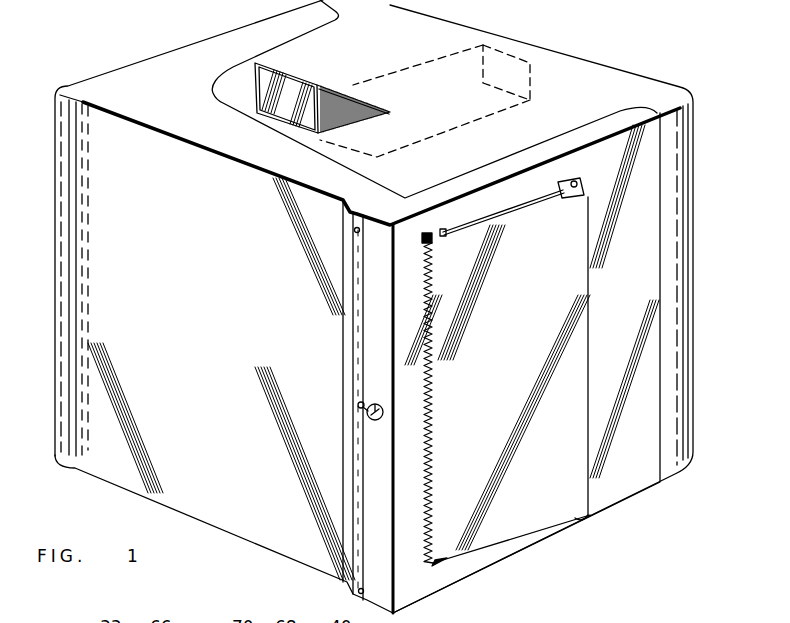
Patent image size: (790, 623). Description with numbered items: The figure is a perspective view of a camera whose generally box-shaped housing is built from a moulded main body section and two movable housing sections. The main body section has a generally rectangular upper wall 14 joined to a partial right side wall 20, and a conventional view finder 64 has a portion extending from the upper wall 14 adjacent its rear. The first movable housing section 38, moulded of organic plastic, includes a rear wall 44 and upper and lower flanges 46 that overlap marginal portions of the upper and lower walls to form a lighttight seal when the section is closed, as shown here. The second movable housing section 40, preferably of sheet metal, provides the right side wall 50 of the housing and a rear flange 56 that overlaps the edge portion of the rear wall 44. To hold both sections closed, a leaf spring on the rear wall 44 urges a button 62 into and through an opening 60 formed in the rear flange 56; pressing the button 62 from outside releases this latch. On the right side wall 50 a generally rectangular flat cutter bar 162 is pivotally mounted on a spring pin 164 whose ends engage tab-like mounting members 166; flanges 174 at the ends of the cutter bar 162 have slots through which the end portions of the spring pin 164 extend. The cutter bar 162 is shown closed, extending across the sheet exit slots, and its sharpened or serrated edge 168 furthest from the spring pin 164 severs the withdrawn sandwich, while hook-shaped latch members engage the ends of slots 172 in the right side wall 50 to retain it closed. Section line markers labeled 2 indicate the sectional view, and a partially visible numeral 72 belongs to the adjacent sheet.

The upper wall 14 is at (572, 67).
The upper and lower flanges 46 is at (130, 83).
The view finder 64 is at (328, 105).
The rear wall 44 is at (222, 290).
The first movable housing section 38 is at (124, 484).
The rear flange 56 is at (377, 533).
The opening 60 is at (378, 421).
The button 62 is at (364, 404).
The right side wall 50 is at (649, 443).
The partial right side wall 20 is at (683, 361).
The second movable housing section 40 is at (498, 565).
The mounting members 166 is at (562, 203).
The flanges 174 is at (523, 205).
The spring pin 164 is at (578, 180).
The cutter bar 162 is at (551, 508).
The edge 168 is at (434, 411).
The slots 172 is at (426, 236).
The section line 2- 2 is at (187, 518).
The element 72 is at (204, 622).